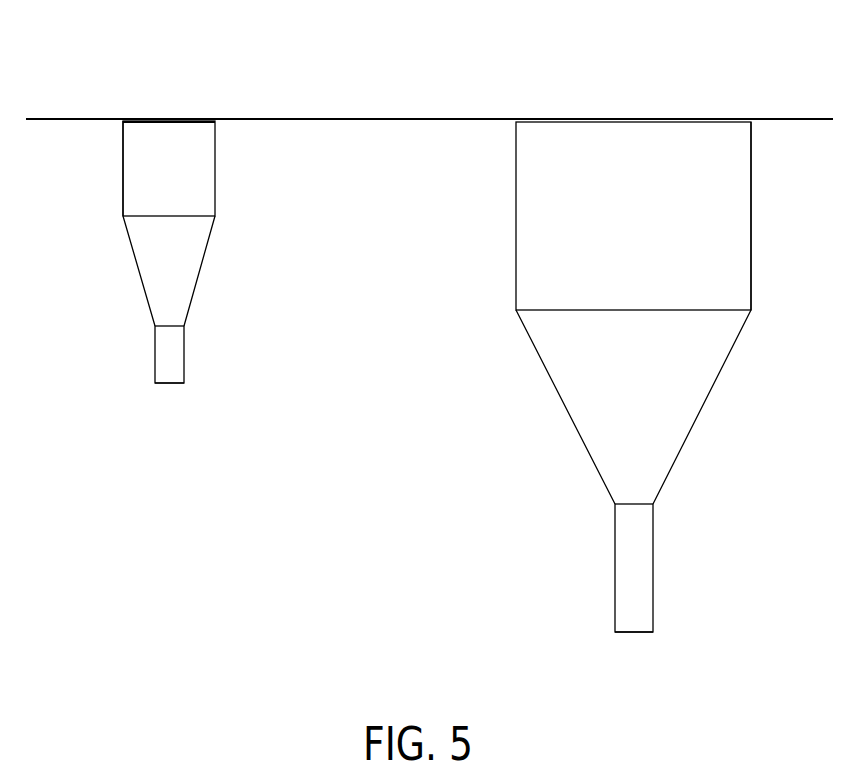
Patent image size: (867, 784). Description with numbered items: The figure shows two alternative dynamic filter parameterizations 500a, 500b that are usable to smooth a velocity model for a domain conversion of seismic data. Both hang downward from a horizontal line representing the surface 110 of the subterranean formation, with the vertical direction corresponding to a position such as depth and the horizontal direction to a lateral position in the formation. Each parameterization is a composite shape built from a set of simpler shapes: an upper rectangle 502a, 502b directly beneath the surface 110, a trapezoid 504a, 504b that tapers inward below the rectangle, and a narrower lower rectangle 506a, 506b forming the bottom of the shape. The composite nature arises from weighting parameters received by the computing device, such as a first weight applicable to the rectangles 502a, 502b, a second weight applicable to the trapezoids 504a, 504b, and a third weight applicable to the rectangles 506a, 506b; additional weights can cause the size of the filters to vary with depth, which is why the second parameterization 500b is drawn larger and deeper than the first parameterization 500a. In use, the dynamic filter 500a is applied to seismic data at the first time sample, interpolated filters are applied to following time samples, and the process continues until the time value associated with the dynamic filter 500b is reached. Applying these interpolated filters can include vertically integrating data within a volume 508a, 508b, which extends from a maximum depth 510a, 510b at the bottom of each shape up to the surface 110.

The surface 110 is at (325, 117).
The dynamic filter parameterization 500a is at (165, 233).
The dynamic filter parameterization 500b is at (626, 362).
The rectangle 502a is at (202, 172).
The rectangle 502b is at (530, 240).
The trapezoid 504a is at (193, 250).
The trapezoid 504b is at (580, 392).
The rectangle 506a is at (177, 357).
The rectangle 506b is at (630, 557).
The volume 508a is at (140, 182).
The volume 508b is at (703, 205).
The maximum depth 510a is at (170, 385).
The maximum depth 510b is at (635, 633).